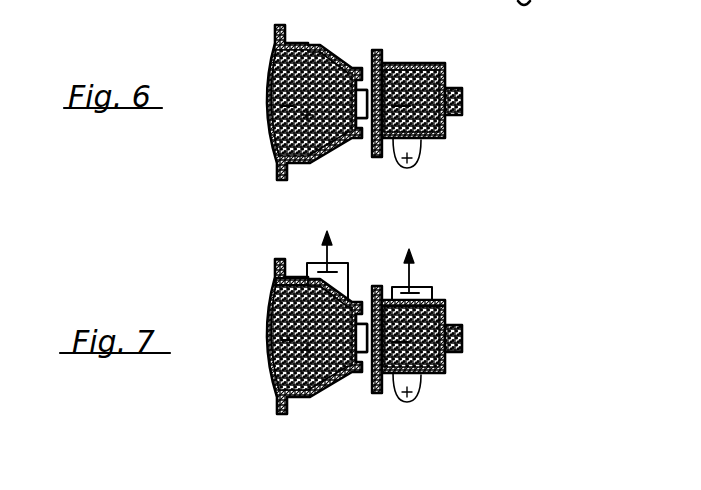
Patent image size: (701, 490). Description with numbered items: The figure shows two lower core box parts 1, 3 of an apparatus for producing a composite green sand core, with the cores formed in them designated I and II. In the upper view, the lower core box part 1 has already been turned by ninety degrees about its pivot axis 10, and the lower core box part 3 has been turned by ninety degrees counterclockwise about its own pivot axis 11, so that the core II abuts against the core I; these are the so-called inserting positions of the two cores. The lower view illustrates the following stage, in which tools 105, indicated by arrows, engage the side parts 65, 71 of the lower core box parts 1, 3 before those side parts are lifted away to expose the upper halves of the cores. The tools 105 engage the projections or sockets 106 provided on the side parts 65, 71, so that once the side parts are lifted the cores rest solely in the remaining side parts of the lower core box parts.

In FIG. 6, the lower core box part 1 is at (283, 221).
In FIG. 7, the lower core box part 1 is at (298, 405).
In FIG. 6, the lower core box part 3 is at (454, 131).
In FIG. 7, the lower core box part 3 is at (452, 366).
In FIG. 6, the pivot axis 10 is at (307, 114).
In FIG. 7, the pivot axis 10 is at (303, 353).
In FIG. 6, the pivot axis 11 is at (420, 150).
In FIG. 7, the pivot axis 11 is at (421, 386).
In FIG. 7, the side part 65 is at (289, 276).
In FIG. 7, the side part 71 is at (447, 306).
In FIG. 7, the tool 105 is at (334, 263).
In FIG. 7, the projection or socket 106 is at (350, 276).